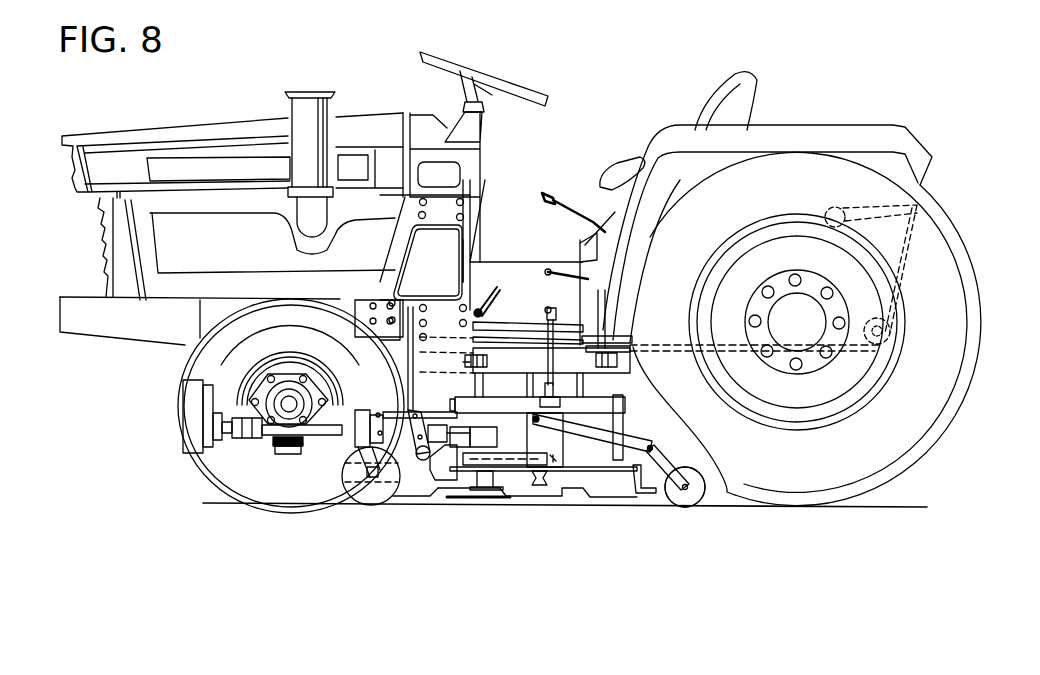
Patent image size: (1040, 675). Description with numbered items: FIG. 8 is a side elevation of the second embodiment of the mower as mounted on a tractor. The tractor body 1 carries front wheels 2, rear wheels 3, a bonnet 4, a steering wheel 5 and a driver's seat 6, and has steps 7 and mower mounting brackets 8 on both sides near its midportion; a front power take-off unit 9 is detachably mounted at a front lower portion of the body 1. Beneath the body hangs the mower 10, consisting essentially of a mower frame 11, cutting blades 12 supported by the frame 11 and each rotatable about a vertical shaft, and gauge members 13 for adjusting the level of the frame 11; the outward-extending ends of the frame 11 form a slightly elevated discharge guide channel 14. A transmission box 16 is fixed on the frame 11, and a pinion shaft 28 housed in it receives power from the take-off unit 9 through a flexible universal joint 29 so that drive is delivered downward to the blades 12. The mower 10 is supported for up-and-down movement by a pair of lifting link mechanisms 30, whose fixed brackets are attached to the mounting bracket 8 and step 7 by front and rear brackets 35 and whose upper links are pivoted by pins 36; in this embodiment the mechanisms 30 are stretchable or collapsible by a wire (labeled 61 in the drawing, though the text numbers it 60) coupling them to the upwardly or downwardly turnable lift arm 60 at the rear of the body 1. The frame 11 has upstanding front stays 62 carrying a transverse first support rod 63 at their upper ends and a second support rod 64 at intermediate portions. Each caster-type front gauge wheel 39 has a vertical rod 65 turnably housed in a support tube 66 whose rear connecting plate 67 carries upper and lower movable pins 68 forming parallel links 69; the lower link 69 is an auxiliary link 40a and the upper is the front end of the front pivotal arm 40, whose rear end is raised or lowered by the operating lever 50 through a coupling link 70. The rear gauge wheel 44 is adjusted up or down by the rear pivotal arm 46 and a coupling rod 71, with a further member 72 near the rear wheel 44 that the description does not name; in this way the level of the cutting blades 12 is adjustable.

The tractor body 1 is at (533, 260).
The front wheels 2 is at (208, 467).
The rear wheels 3 is at (786, 478).
The bonnet 4 is at (207, 123).
The steering wheel 5 is at (549, 95).
The driver's seat 6 is at (732, 88).
The steps 7 is at (498, 345).
The mower mounting brackets 8 is at (463, 240).
The front power take-off unit 9 is at (191, 424).
The mower 10 is at (530, 497).
The mower frame 11 is at (578, 473).
The cutting blades 12 is at (437, 497).
The gauge members 13 is at (344, 496).
The discharge guide channel 14 is at (457, 468).
The transmission box 16 is at (487, 436).
The pinion shaft 28 is at (480, 312).
The flexible universal joint 29 is at (325, 448).
The lifting link mechanisms 30 is at (636, 420).
The front and rear brackets 35 is at (463, 362).
The pin 36 is at (660, 359).
The front gauge wheels 39 is at (372, 494).
The front pivotal arm 40 is at (498, 343).
The auxiliary link 40a is at (407, 457).
The rear gauge wheel 44 is at (692, 498).
The rear pivotal arm 46 is at (628, 442).
The operating lever 50 is at (550, 308).
The lift arm 60 is at (835, 207).
The bracket 61 is at (633, 342).
The front stays 62 is at (415, 413).
The first support rod 63 is at (413, 393).
The second support rod 64 is at (425, 493).
The vertical rod 65 is at (356, 442).
The support tube 66 is at (314, 357).
The connecting plate 67 is at (341, 360).
The movable pins 68 is at (364, 299).
The parallel links 69 is at (362, 448).
The coupling link 70 is at (530, 328).
The coupling rod 71 is at (560, 403).
The link 72 is at (656, 450).